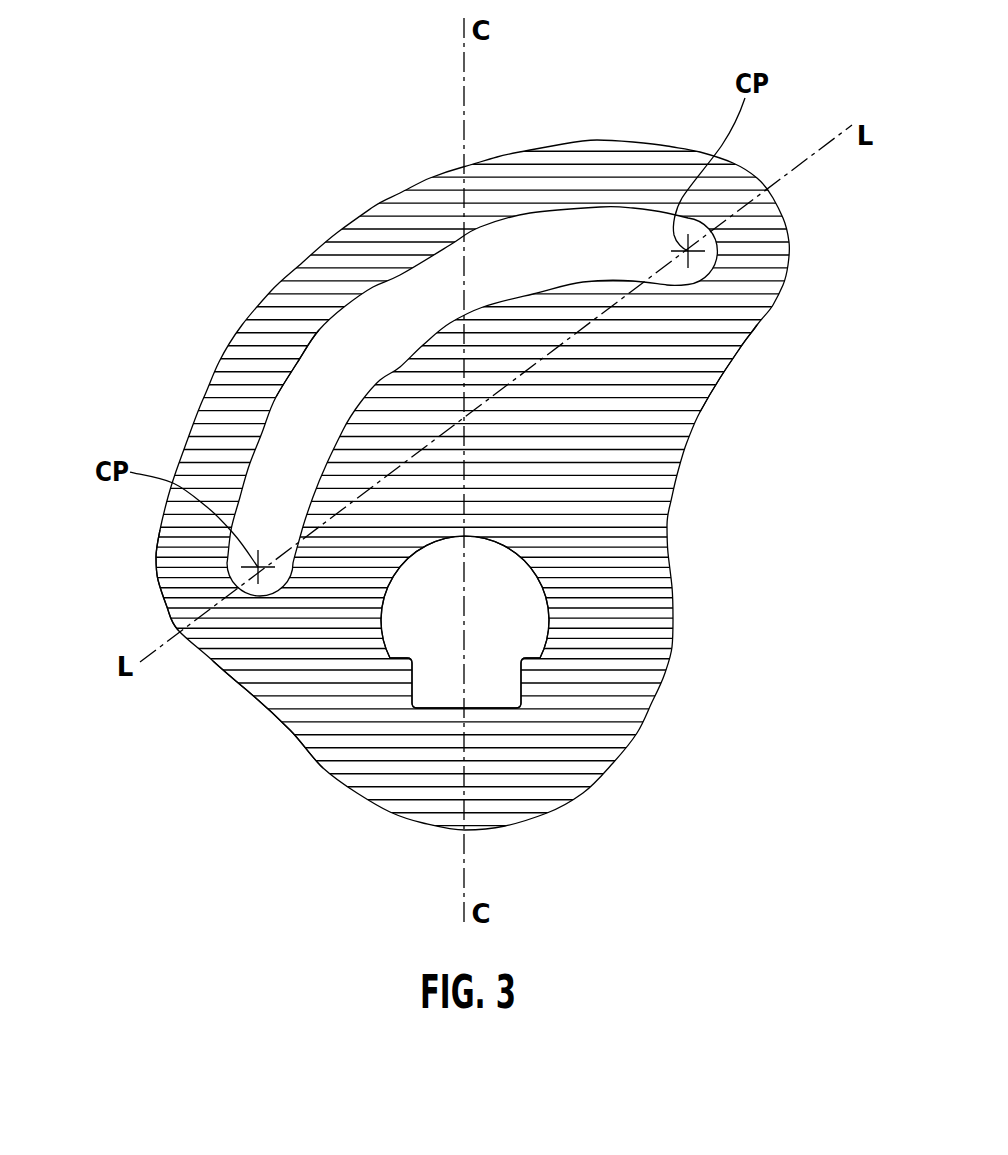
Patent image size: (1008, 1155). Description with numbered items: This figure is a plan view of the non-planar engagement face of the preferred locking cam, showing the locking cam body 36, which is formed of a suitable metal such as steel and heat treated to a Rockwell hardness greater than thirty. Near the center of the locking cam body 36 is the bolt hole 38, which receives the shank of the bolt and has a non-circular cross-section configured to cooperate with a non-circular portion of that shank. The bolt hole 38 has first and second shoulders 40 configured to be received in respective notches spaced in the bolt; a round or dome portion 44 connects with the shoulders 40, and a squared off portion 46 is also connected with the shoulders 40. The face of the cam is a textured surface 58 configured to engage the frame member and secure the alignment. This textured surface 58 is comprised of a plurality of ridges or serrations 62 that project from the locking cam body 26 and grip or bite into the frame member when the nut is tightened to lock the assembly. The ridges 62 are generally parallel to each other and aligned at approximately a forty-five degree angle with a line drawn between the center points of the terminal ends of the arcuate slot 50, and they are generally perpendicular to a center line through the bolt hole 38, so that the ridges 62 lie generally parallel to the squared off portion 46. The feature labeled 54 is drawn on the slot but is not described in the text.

The locking cam body 26 is at (301, 140).
The locking cam body 36 is at (735, 360).
The bolt hole 38 is at (453, 678).
The shoulders 40 is at (540, 658).
The dome portion 44 is at (524, 561).
The squared off portion 46 is at (522, 708).
The arcuate slot 50 is at (610, 221).
The slot side wall 54 is at (299, 377).
The textured surface 58 is at (319, 699).
The ridges 62 is at (156, 574).